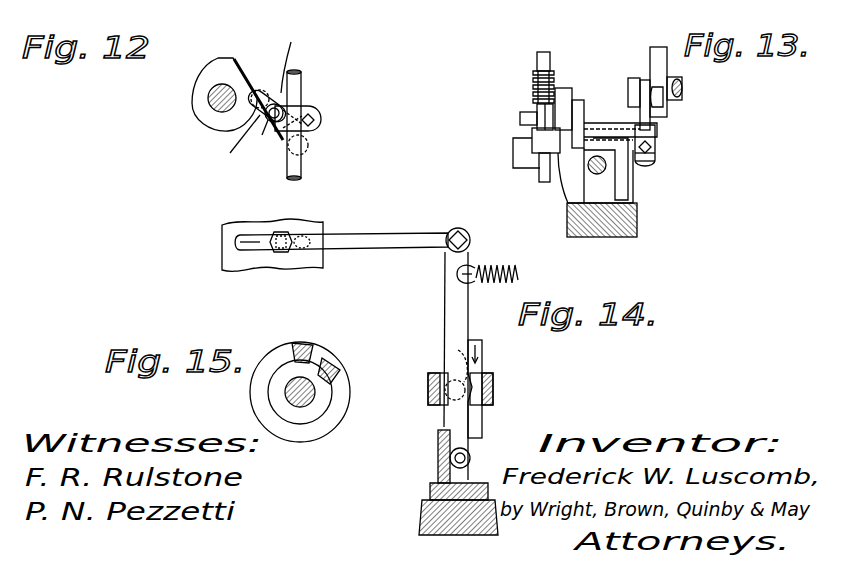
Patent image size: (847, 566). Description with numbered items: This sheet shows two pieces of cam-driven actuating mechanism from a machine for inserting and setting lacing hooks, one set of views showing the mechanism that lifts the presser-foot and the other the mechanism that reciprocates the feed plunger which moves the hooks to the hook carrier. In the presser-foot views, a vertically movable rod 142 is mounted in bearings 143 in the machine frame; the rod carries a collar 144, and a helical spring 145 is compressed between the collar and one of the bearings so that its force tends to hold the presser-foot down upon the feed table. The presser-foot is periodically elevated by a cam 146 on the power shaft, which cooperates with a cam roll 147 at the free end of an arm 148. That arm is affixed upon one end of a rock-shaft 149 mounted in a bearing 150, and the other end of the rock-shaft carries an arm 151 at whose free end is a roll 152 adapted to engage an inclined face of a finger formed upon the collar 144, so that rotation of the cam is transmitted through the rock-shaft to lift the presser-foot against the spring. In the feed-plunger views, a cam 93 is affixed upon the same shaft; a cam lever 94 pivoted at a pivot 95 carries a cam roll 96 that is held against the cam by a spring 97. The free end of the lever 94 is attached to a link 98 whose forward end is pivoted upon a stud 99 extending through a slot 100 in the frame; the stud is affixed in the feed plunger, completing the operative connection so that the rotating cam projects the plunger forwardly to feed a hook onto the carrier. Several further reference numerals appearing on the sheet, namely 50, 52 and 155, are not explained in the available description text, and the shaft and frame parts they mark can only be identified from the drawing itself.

In FIG. 14, the frame / bed 50 is at (238, 228).
In FIG. 12, the shaft 52 is at (214, 112).
In FIG. 13, the shaft 52 is at (682, 92).
In FIG. 14, the shaft 52 is at (493, 393).
In FIG. 15, the shaft 52 is at (300, 392).
In FIG. 14, the cam 93 is at (482, 357).
In FIG. 15, the cam 93 is at (314, 357).
In FIG. 14, the cam lever 94 is at (452, 298).
In FIG. 14, the pivot 95 is at (468, 460).
In FIG. 14, the cam roll 96 is at (450, 380).
In FIG. 14, the spring 97 is at (505, 265).
In FIG. 14, the link 98 is at (385, 238).
In FIG. 14, the stud 99 is at (281, 232).
In FIG. 14, the slot 100 is at (236, 243).
In FIG. 12, the vertically movable rod 142 is at (301, 82).
In FIG. 13, the vertically movable rod 142 is at (536, 55).
In FIG. 13, the bearings 143 is at (530, 148).
In FIG. 12, the collar 144 is at (321, 118).
In FIG. 13, the collar 144 is at (538, 113).
In FIG. 13, the helical spring 145 is at (533, 77).
In FIG. 12, the cam 146 is at (200, 84).
In FIG. 13, the cam 146 is at (657, 50).
In FIG. 12, the cam roll 147 is at (261, 91).
In FIG. 13, the cam roll 147 is at (662, 106).
In FIG. 12, the arm 148 is at (236, 145).
In FIG. 13, the arm 148 is at (645, 85).
In FIG. 12, the rock-shaft 149 is at (308, 146).
In FIG. 13, the rock-shaft 149 is at (658, 140).
In FIG. 13, the bearing 150 is at (605, 126).
In FIG. 13, the arm 151 is at (577, 100).
In FIG. 12, the roll 152 is at (261, 137).
In FIG. 12, the connection 155 is at (299, 61).